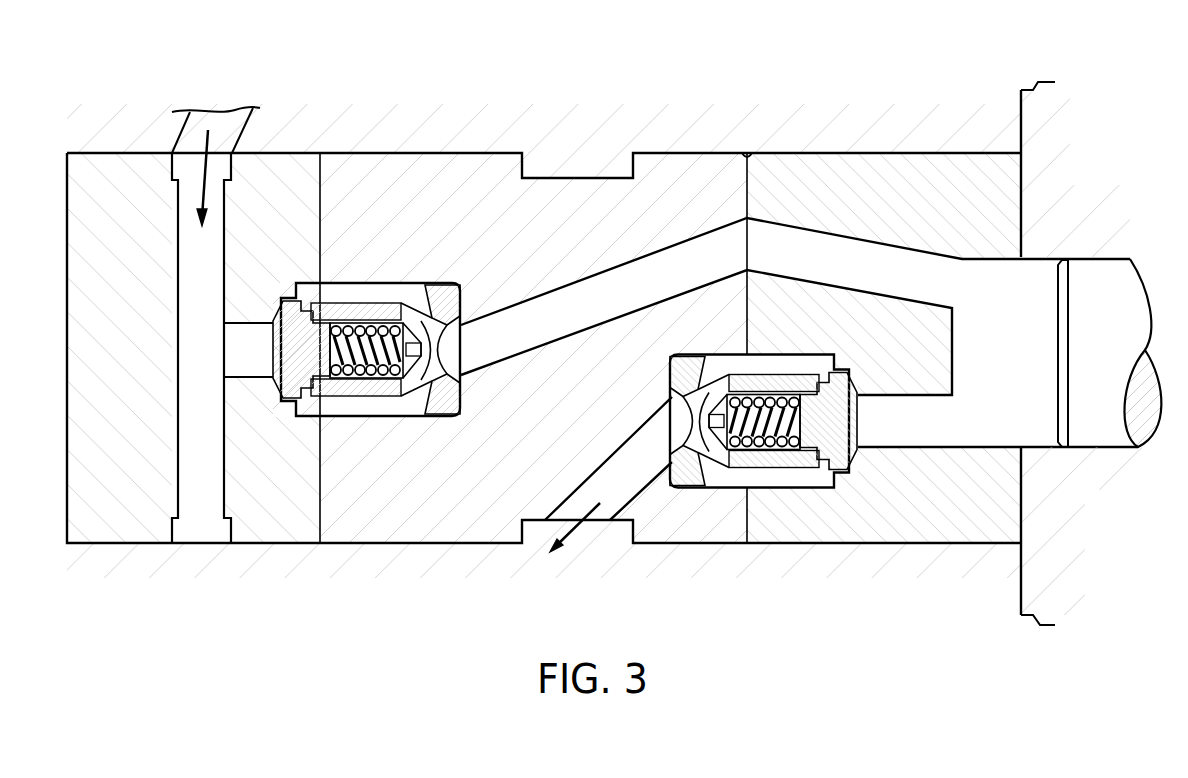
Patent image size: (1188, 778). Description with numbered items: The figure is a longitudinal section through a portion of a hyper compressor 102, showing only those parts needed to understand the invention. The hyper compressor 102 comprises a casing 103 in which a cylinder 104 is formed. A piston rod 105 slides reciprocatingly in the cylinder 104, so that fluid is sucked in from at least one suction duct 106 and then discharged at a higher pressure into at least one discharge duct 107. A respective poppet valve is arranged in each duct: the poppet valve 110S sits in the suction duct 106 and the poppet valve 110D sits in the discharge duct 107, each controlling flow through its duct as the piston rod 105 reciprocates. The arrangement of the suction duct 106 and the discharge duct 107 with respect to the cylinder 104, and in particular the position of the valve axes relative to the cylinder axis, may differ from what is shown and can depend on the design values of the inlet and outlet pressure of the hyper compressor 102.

The hyper compressor 102 is at (747, 98).
The casing 103 is at (1033, 585).
The cylinder 104 is at (1038, 285).
The piston rod 105 is at (1102, 408).
The suction duct 106 is at (238, 125).
The discharge duct 107 is at (607, 505).
The poppet valve in the suction duct 110S is at (397, 283).
The poppet valve in the discharge duct 110D is at (781, 490).